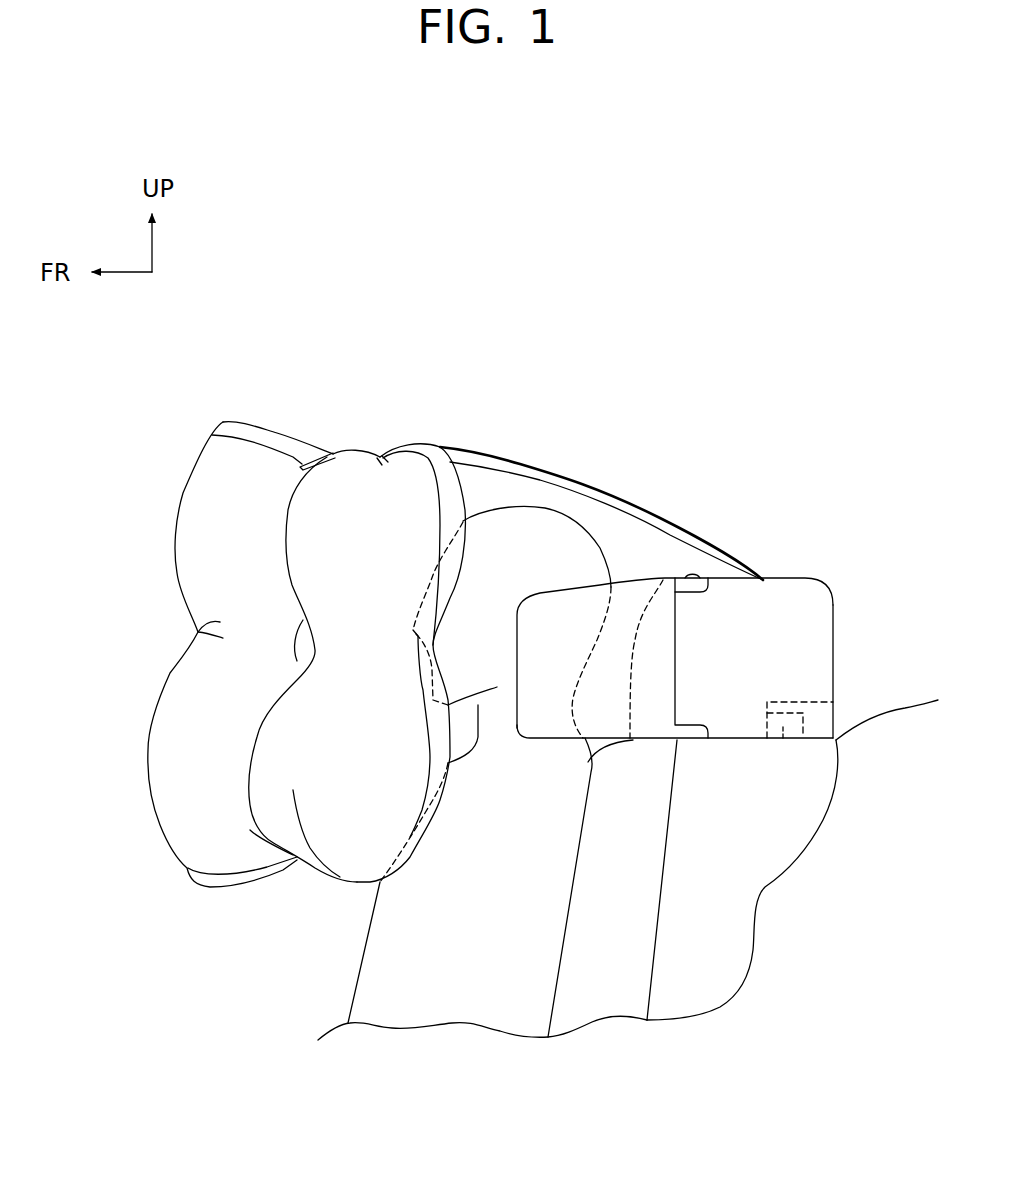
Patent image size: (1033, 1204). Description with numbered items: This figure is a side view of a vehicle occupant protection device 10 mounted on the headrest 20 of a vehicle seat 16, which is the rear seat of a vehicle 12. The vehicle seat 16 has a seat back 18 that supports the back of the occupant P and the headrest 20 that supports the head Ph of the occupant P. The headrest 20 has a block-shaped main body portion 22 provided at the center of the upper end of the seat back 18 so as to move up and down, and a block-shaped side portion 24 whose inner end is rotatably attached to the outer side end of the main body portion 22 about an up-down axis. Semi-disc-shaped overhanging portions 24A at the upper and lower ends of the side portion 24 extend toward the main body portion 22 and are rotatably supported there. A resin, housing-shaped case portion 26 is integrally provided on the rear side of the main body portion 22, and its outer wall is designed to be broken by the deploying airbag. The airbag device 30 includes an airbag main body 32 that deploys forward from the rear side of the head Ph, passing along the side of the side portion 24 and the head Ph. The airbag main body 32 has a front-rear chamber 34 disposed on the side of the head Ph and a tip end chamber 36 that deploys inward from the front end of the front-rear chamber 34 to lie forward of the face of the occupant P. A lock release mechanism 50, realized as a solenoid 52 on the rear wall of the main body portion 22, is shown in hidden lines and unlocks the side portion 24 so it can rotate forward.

The vehicle occupant protection device 10 is at (786, 531).
The vehicle 12 is at (703, 484).
The vehicle seat 16 is at (553, 977).
The seat back 18 is at (572, 883).
The headrest 20 is at (828, 582).
The main body portion 22 is at (663, 580).
The side portion 24 is at (541, 712).
The overhanging portion 24A is at (695, 592).
The case portion 26 is at (808, 650).
The airbag device 30 is at (266, 420).
The airbag main body 32 is at (172, 493).
The front-rear chamber 34 is at (469, 456).
The tip end chamber 36 is at (273, 766).
The lock release mechanism 50 is at (814, 721).
The solenoid 52 is at (783, 740).
The occupant P is at (573, 513).
The head Ph is at (611, 587).